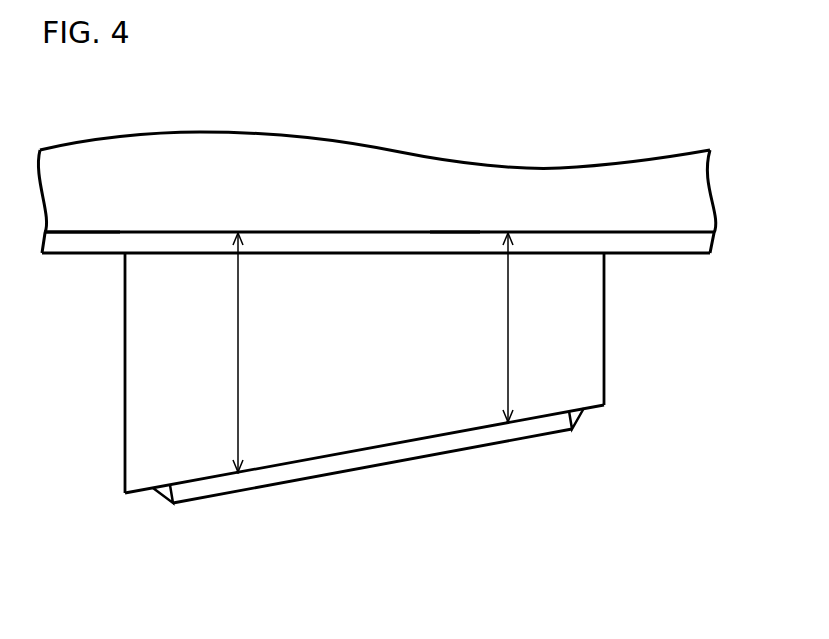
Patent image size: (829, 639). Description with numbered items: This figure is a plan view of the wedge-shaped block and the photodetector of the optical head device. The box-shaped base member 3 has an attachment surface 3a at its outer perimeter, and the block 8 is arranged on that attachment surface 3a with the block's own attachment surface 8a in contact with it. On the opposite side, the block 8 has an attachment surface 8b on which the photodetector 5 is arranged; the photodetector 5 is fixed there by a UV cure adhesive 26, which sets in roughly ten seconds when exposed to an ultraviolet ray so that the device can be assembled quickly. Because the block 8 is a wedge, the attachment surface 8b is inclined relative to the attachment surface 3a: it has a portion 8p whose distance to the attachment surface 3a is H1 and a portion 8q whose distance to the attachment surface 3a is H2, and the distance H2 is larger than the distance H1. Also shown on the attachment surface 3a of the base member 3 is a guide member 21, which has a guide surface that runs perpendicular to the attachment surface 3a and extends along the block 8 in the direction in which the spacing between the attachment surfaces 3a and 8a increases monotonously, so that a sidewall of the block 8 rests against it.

The base member 3 is at (680, 194).
The attachment surface 3a is at (115, 234).
The block 8 is at (605, 290).
The attachment surface 8a is at (453, 230).
The attachment surface 8b is at (204, 480).
The portion 8p is at (508, 425).
The portion 8q is at (237, 480).
The photodetector 5 is at (378, 466).
The guide member 21 is at (680, 239).
The UV cure adhesive 26 is at (585, 412).
The distance H1 is at (508, 319).
The distance H2 is at (238, 327).